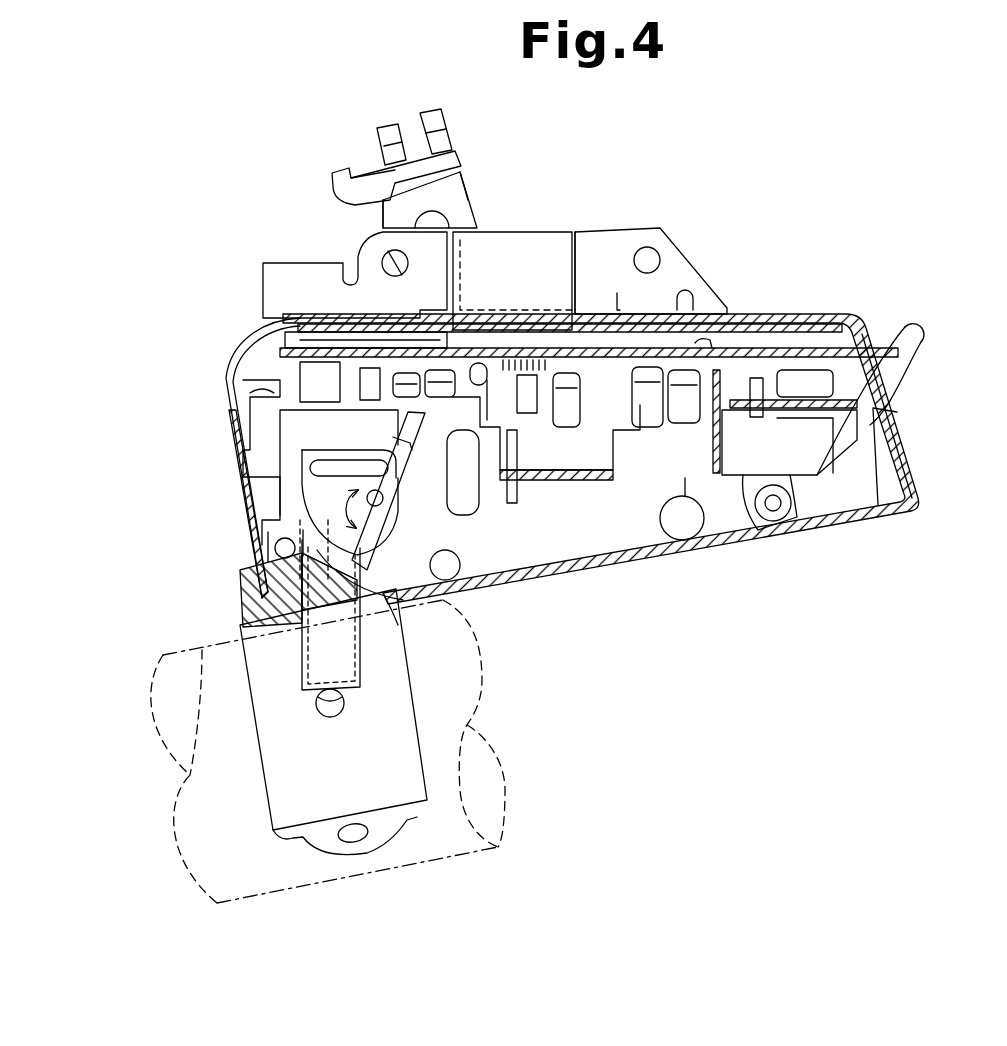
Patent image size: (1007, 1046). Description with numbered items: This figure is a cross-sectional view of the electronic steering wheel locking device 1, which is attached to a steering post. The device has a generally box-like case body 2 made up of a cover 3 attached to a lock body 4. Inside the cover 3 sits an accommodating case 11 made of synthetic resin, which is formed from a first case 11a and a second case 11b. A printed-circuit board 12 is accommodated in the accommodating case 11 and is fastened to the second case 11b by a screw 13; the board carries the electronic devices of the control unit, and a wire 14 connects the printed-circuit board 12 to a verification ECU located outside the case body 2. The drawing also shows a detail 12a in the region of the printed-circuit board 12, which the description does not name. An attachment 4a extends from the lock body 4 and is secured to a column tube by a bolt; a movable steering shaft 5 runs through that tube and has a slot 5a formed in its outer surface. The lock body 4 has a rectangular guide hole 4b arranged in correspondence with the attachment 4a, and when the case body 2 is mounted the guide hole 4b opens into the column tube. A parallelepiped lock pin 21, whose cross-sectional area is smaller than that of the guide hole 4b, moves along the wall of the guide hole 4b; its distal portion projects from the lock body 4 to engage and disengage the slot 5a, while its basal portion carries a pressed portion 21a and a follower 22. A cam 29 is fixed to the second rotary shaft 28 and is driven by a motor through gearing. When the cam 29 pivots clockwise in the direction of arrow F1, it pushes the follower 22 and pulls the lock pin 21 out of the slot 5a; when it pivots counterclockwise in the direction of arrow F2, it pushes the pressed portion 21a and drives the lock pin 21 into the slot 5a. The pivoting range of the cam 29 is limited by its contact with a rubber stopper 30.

The electronic steering wheel locking device 1 is at (741, 222).
The case body 2 is at (226, 383).
The cover 3 is at (852, 316).
The lock body 4 is at (242, 580).
The attachment 4a is at (273, 800).
The guide hole 4b is at (305, 655).
The steering shaft 5 is at (420, 865).
The slot 5a is at (345, 707).
The accommodating case 11 is at (748, 321).
The first case 11a is at (647, 332).
The second case 11b is at (590, 477).
The printed-circuit board 12 is at (858, 338).
The connector bolt 12a is at (643, 417).
The screw 13 is at (703, 340).
The wire 14 is at (910, 360).
The lock pin 21 is at (347, 652).
The pressed portion 21a is at (329, 583).
The follower 22 is at (362, 455).
The second rotary shaft 28 is at (372, 492).
The cam 29 is at (407, 621).
The rubber stopper 30 is at (452, 500).
The arrow F1 is at (410, 460).
The arrow F2 is at (373, 487).